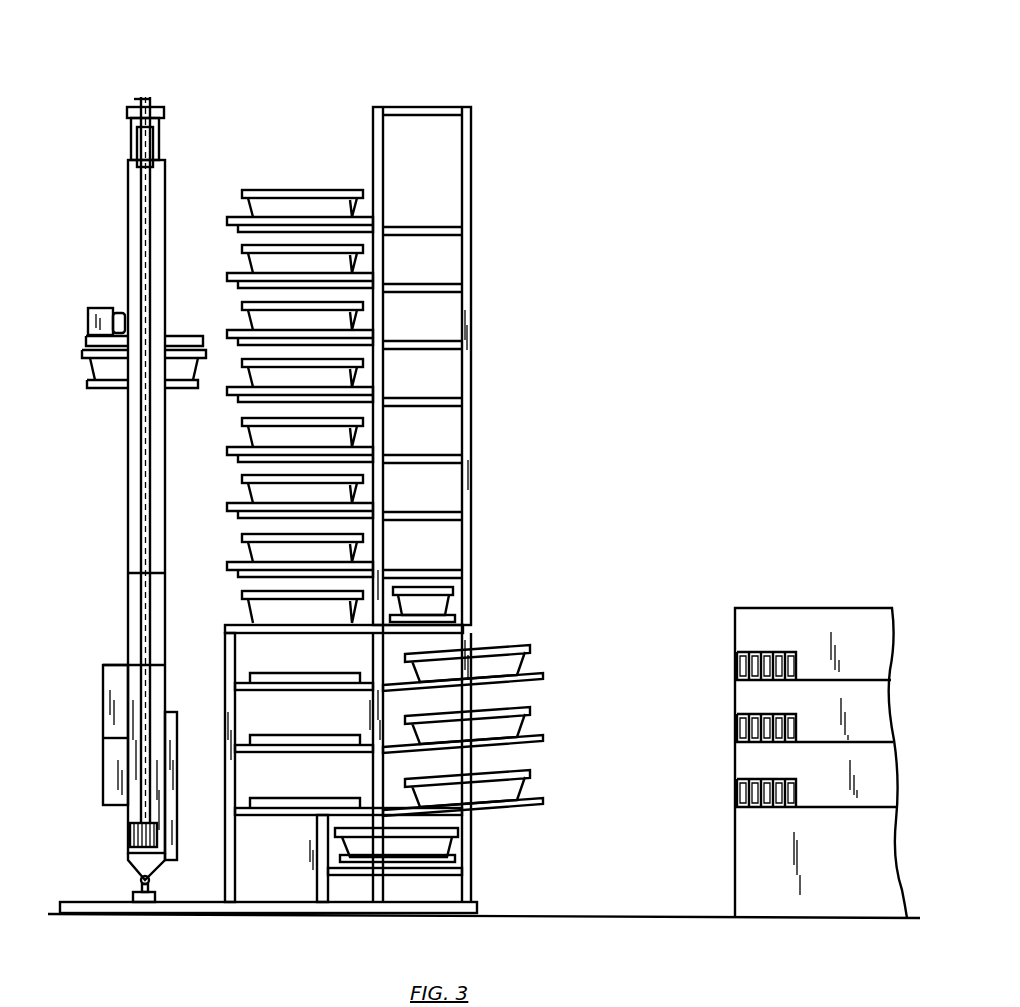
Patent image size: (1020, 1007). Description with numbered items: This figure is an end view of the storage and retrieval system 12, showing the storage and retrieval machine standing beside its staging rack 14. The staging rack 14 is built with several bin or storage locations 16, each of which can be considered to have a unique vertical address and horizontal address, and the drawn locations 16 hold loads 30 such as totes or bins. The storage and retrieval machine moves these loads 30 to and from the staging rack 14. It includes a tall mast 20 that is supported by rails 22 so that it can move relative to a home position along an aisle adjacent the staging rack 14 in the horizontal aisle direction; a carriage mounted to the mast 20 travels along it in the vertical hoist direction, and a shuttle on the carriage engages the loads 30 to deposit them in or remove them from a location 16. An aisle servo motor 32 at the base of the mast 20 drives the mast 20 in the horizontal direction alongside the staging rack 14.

The storage and retrieval system 12 is at (132, 88).
The staging rack 14 is at (232, 210).
The storage locations 16 is at (235, 272).
The mast 20 is at (130, 205).
The rails 22 is at (162, 110).
The loads 30 is at (313, 189).
The aisle servo motor 32 is at (130, 828).